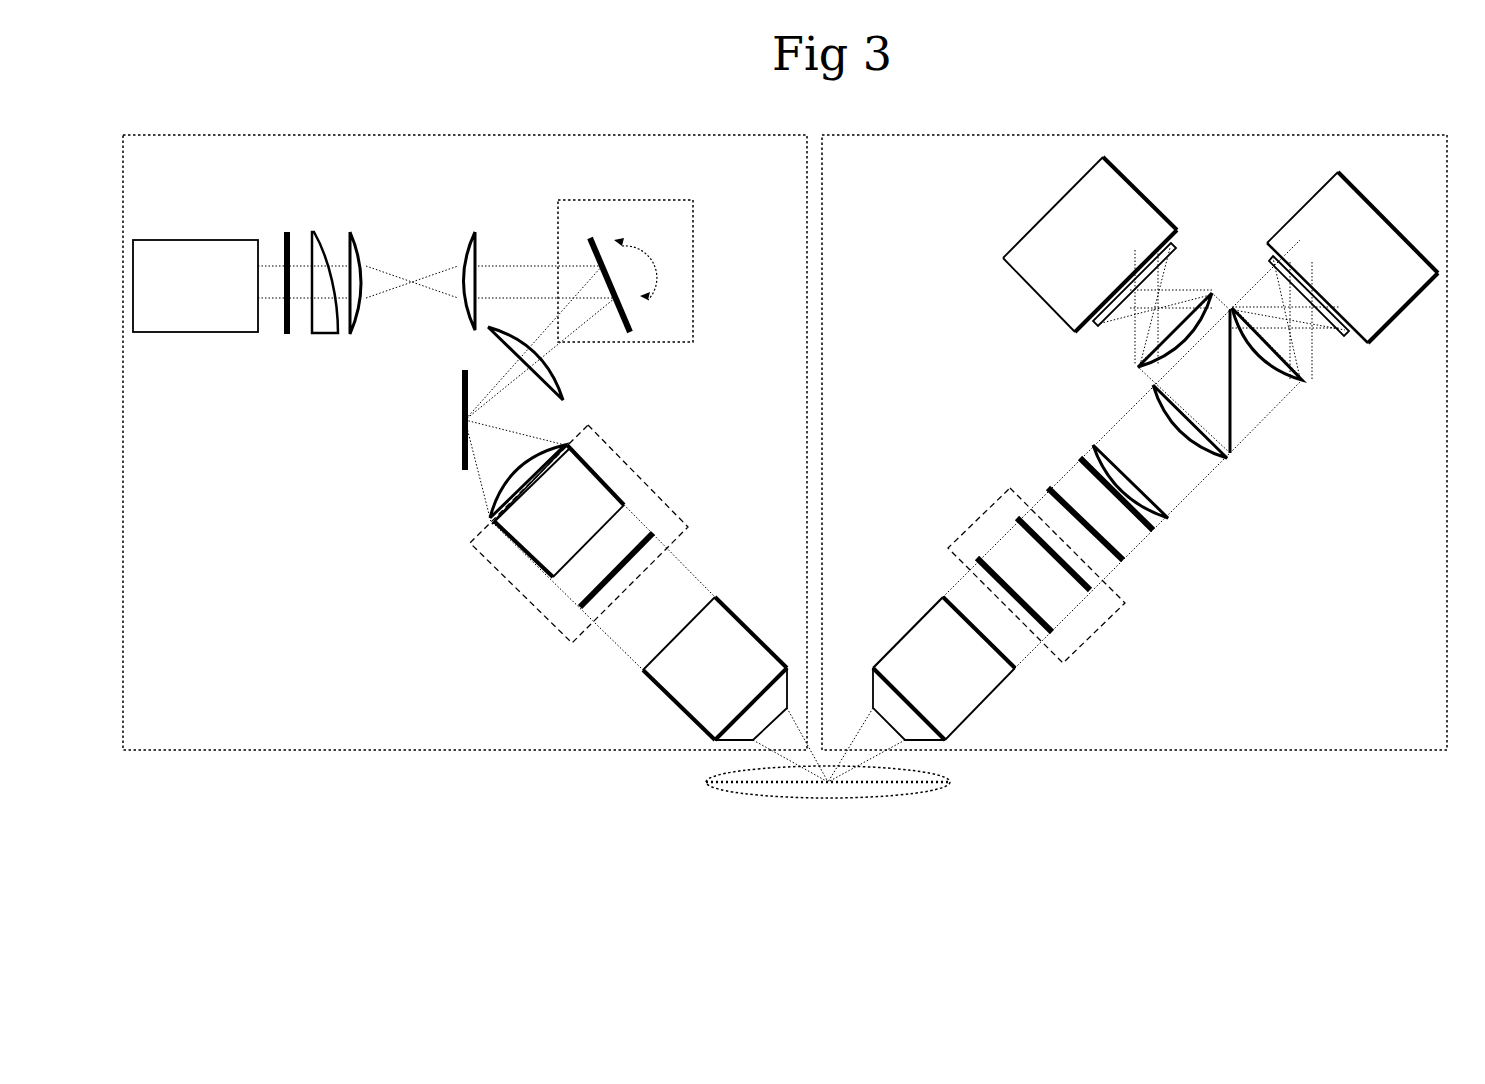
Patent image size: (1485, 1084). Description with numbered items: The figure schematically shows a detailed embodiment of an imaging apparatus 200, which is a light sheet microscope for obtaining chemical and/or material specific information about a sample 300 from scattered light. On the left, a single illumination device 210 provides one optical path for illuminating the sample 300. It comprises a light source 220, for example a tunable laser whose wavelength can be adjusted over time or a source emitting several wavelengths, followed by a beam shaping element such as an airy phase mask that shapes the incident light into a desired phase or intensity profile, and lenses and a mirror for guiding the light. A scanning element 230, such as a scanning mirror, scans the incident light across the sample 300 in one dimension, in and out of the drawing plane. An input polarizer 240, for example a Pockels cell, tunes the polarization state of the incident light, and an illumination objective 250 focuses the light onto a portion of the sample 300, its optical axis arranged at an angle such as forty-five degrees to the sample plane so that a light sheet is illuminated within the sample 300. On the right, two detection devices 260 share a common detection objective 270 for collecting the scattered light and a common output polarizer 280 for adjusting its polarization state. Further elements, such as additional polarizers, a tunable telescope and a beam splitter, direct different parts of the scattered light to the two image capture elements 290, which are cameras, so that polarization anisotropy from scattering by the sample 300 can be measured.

The imaging apparatus 200 is at (345, 784).
The illumination device 210 is at (190, 735).
The light source 220 is at (195, 286).
The scanning element 230 is at (625, 271).
The input polarizer 240 is at (579, 534).
The illumination objective 250 is at (715, 668).
The detection device 260 is at (1277, 731).
The detection objective 270 is at (944, 668).
The output polarizer 280 is at (1036, 575).
The image capture element 290 is at (1281, 212).
The sample 300 is at (828, 797).